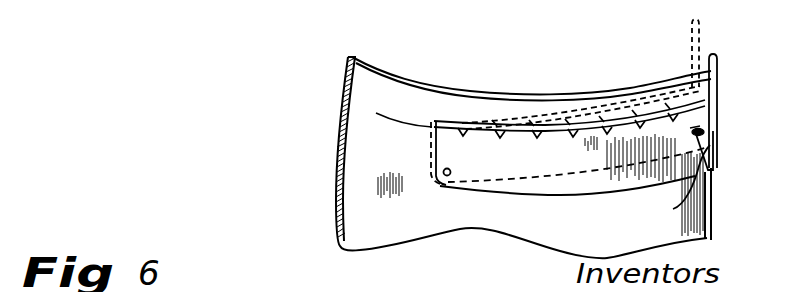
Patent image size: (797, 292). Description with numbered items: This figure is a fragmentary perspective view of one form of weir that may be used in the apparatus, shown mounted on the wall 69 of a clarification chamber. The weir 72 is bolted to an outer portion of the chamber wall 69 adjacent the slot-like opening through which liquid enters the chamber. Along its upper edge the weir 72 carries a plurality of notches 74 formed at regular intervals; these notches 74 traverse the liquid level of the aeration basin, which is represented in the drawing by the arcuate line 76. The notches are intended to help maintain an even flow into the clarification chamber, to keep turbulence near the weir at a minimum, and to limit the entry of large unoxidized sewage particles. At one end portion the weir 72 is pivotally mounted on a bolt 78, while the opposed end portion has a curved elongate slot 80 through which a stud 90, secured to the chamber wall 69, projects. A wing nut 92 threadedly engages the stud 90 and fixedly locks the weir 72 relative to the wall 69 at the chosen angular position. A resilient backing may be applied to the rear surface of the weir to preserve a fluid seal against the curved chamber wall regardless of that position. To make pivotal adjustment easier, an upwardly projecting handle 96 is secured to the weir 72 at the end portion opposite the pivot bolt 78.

The wall 69 is at (598, 233).
The weir 72 is at (494, 173).
The notches 74 is at (531, 158).
The arcuate line 76 is at (377, 115).
The bolt 78 is at (447, 175).
The curved elongate slot 80 is at (678, 186).
The stud 90 is at (705, 131).
The wing nut 92 is at (714, 120).
The handle 96 is at (700, 33).